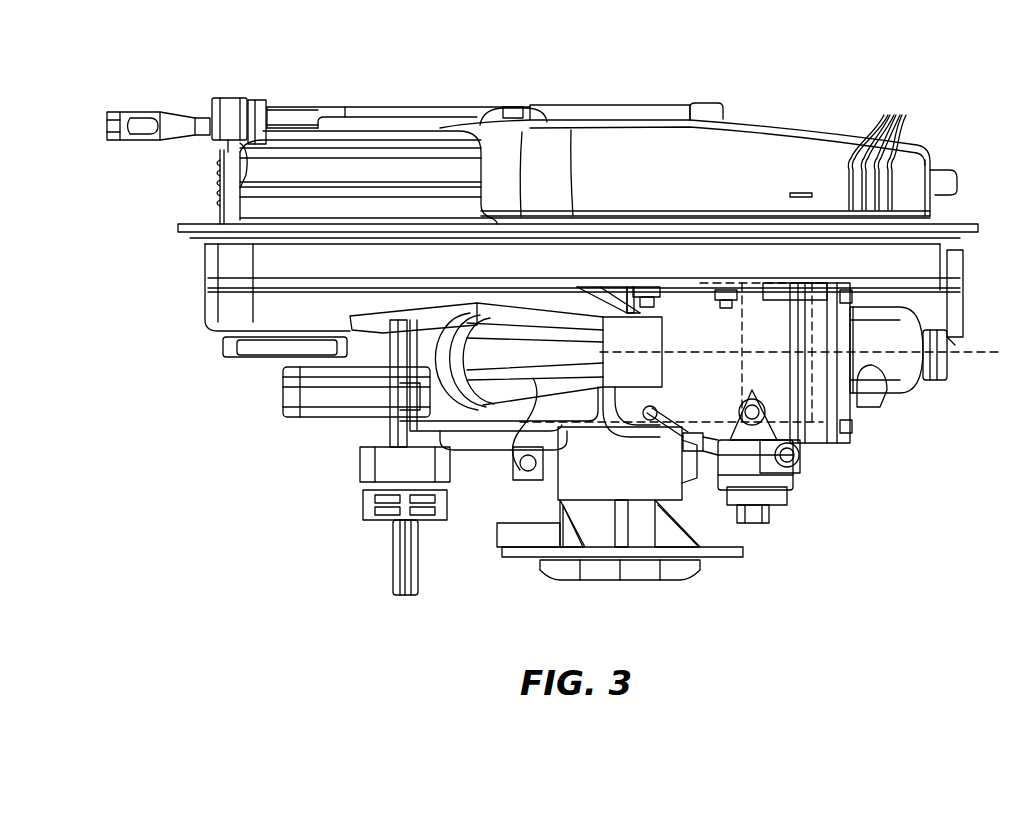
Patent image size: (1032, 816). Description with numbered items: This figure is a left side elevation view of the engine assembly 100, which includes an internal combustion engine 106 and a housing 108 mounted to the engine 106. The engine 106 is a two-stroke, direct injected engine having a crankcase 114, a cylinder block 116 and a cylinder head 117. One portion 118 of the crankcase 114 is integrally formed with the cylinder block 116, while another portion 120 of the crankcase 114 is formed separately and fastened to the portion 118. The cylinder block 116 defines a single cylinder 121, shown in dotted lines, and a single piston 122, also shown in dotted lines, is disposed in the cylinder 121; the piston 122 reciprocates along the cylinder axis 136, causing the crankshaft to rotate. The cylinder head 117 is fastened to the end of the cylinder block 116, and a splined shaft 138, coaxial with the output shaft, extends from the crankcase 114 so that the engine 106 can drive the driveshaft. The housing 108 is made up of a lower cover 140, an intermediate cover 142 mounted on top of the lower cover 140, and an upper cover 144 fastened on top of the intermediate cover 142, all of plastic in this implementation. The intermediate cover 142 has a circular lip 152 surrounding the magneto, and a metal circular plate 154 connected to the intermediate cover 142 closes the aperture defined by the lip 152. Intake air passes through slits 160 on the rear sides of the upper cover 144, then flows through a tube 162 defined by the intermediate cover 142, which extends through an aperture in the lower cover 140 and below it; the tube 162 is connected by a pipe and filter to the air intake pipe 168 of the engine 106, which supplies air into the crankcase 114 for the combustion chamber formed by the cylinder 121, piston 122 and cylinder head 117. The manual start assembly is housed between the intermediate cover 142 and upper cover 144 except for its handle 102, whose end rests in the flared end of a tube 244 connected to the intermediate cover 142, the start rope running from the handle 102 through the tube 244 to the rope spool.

The engine assembly 100 is at (340, 84).
The handle 102 is at (130, 111).
The internal combustion engine 106 is at (850, 462).
The housing 108 is at (942, 130).
The crankcase 114 is at (333, 477).
The cylinder block 116 is at (701, 508).
The cylinder head 117 is at (832, 443).
The portion of the crankcase 118 is at (490, 432).
The portion of the crankcase 120 is at (303, 397).
The cylinder 121 is at (680, 433).
The piston 122 is at (813, 382).
The cylinder axis 136 is at (968, 352).
The splined shaft 138 is at (400, 580).
The lower cover 140 is at (210, 312).
The intermediate cover 142 is at (970, 225).
The upper cover 144 is at (812, 127).
The circular lip 152 is at (255, 192).
The circular plate 154 is at (295, 128).
The slits 160 is at (881, 151).
The tube 162 is at (790, 291).
The air intake pipe 168 is at (535, 432).
The tube 244 is at (228, 98).